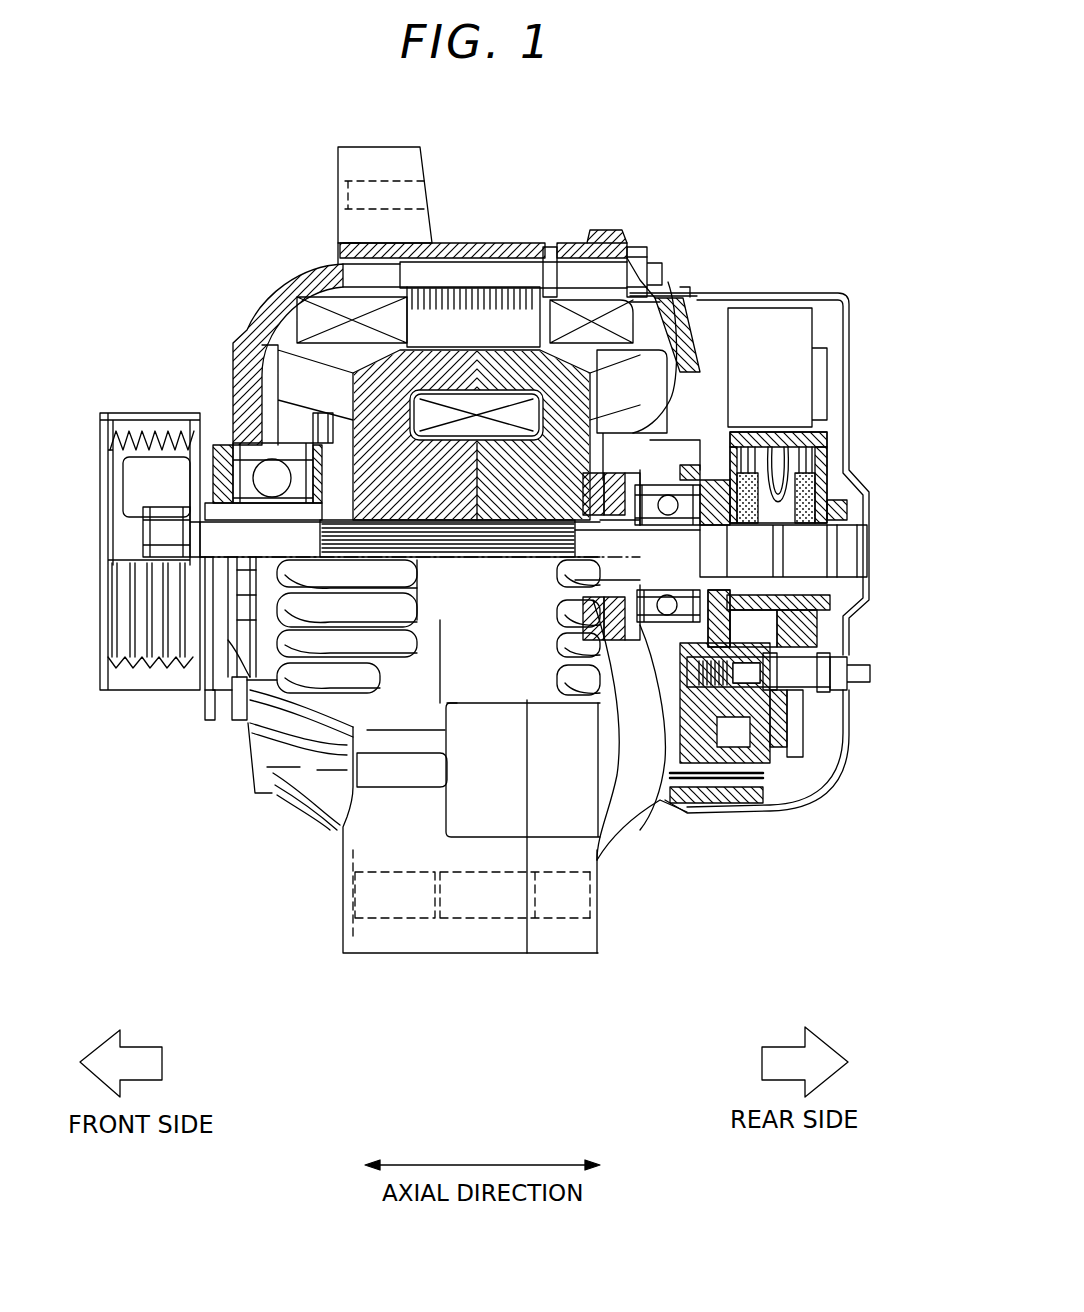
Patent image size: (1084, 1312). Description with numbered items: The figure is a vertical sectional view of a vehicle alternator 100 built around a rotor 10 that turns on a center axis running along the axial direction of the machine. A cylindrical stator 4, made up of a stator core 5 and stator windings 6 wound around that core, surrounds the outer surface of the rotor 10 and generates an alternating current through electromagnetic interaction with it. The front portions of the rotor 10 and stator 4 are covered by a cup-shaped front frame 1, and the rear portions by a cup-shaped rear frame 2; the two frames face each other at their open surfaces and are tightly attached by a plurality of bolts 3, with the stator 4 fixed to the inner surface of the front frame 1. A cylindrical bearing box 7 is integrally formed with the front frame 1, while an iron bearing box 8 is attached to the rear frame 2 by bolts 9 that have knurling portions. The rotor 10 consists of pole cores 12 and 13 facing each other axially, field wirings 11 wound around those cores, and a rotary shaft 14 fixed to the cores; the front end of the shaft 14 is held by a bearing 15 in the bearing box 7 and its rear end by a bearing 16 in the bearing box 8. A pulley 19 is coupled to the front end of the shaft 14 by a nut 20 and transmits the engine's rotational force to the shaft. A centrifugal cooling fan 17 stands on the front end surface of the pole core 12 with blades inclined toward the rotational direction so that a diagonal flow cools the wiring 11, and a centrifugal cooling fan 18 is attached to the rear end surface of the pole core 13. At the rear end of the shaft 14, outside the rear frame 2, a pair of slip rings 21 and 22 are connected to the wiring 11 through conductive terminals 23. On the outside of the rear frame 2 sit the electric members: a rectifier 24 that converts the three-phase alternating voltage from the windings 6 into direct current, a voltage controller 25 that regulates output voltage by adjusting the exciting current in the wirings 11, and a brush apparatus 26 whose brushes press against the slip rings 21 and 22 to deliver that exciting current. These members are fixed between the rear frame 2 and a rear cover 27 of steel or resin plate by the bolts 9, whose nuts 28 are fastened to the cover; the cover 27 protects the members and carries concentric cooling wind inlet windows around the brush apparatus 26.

The alternator 100 is at (719, 164).
The front frame 1 is at (385, 936).
The rear frame 2 is at (568, 936).
The bolts 3 is at (492, 276).
The stator 4 is at (508, 340).
The stator core 5 is at (452, 312).
The stator windings 6 is at (345, 300).
The bearing box 7 is at (240, 614).
The bearing box 8 is at (688, 782).
The bolts 9 is at (871, 673).
The rotor 10 is at (448, 347).
The field wirings 11 is at (572, 302).
The pole core 12 is at (300, 356).
The pole core 13 is at (597, 425).
The rotary shaft 14 is at (212, 536).
The bearing 15 is at (262, 462).
The bearing 16 is at (662, 490).
The centrifugal cooling fan 17 is at (240, 342).
The centrifugal cooling fan 18 is at (693, 322).
The pulley 19 is at (107, 692).
The nut 20 is at (143, 523).
The slip ring 21 is at (760, 546).
The slip ring 22 is at (817, 551).
The conductive terminals 23 is at (620, 467).
The rectifier 24 is at (805, 731).
The voltage controller 25 is at (795, 336).
The brush apparatus 26 is at (818, 441).
The rear cover 27 is at (868, 591).
The nuts 28 is at (846, 691).